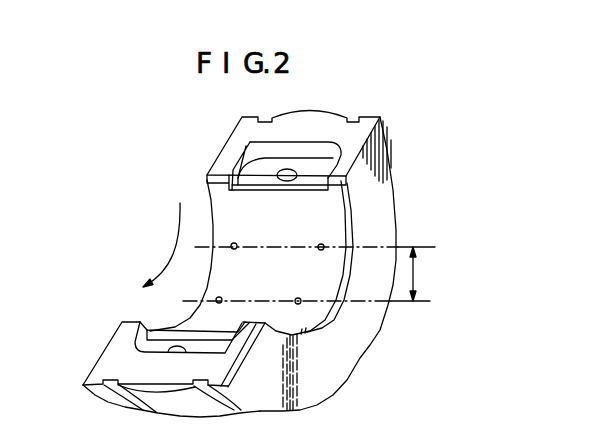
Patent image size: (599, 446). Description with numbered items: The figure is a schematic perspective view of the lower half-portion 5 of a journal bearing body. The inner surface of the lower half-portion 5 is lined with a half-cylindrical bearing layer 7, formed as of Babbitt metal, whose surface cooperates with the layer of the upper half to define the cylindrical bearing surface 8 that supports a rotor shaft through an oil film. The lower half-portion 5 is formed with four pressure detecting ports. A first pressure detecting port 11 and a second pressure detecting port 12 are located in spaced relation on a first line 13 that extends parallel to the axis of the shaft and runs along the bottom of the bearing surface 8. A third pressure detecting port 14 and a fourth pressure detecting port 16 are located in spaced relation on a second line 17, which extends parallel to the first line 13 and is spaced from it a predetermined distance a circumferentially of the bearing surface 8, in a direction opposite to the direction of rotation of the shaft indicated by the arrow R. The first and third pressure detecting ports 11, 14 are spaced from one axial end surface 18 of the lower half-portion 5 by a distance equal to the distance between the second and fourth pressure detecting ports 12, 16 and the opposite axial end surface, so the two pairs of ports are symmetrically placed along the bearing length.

The lower half-portion 5 is at (395, 233).
The bearing layer 7 is at (350, 231).
The bearing surface 8 is at (270, 275).
The first pressure detecting port 11 is at (299, 283).
The second pressure detecting port 12 is at (219, 297).
The first line 13 is at (390, 303).
The third pressure detecting port 14 is at (320, 244).
The fourth pressure detecting port 16 is at (233, 243).
The second line 17 is at (402, 247).
The axial end surface 18 is at (328, 381).
The predetermined distance a is at (422, 274).
The arrow R is at (161, 245).